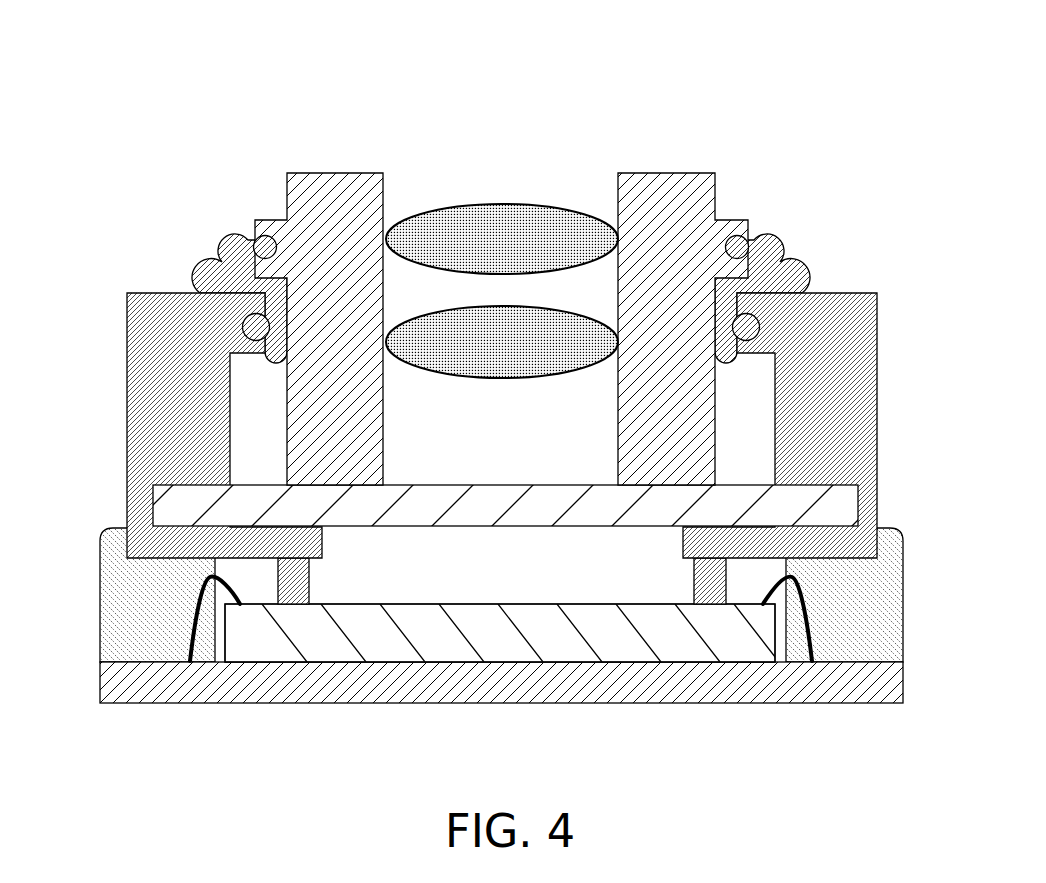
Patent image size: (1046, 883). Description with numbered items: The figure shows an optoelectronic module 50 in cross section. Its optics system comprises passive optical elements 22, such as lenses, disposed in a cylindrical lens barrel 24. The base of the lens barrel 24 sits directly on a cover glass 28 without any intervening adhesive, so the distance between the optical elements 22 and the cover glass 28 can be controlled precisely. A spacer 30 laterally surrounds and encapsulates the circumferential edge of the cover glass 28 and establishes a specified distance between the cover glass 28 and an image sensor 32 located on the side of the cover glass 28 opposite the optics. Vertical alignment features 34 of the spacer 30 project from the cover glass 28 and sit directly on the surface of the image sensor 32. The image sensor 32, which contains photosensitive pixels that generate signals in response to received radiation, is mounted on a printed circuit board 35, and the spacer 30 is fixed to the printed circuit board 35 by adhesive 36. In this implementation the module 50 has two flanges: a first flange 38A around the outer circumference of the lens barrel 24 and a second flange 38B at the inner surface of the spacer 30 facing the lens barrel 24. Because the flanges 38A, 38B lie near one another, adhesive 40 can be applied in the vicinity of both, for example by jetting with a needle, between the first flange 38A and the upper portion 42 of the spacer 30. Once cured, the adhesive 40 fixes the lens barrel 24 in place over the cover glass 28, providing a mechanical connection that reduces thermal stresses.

The passive optical elements 22 is at (508, 320).
The lens barrel 24 is at (288, 187).
The cover glass 28 is at (458, 485).
The spacer 30 is at (128, 505).
The image sensor 32 is at (467, 603).
The vertical alignment features 34 is at (310, 588).
The printed circuit board 35 is at (267, 703).
The adhesive 36 is at (100, 615).
The first flange 38A is at (265, 220).
The second flange 38B is at (252, 350).
The adhesive 40 is at (223, 260).
The upper portion of the spacer 42 is at (128, 323).
The module 50 is at (626, 116).